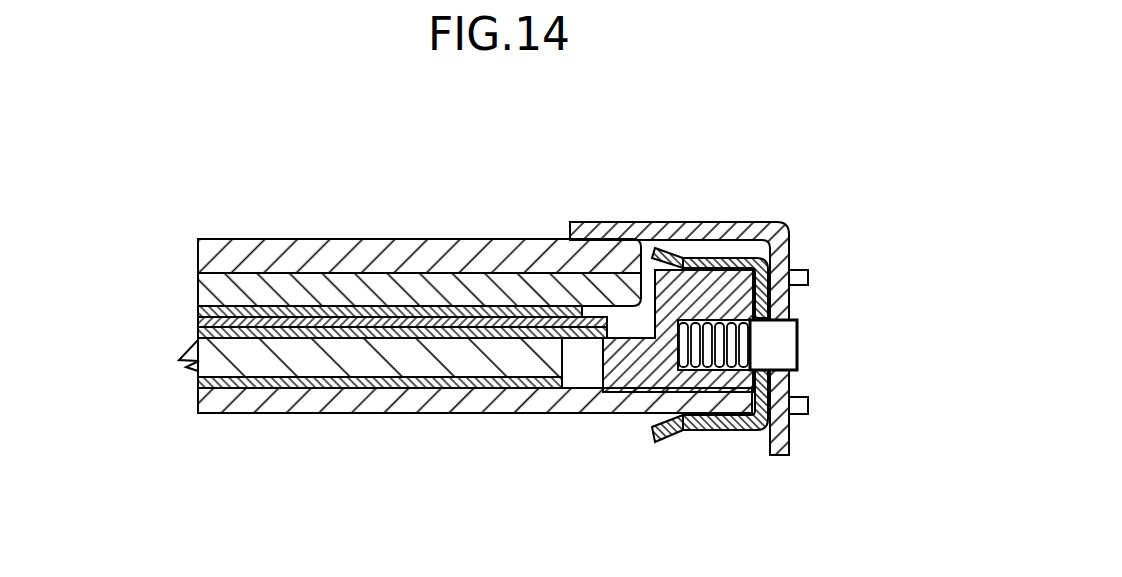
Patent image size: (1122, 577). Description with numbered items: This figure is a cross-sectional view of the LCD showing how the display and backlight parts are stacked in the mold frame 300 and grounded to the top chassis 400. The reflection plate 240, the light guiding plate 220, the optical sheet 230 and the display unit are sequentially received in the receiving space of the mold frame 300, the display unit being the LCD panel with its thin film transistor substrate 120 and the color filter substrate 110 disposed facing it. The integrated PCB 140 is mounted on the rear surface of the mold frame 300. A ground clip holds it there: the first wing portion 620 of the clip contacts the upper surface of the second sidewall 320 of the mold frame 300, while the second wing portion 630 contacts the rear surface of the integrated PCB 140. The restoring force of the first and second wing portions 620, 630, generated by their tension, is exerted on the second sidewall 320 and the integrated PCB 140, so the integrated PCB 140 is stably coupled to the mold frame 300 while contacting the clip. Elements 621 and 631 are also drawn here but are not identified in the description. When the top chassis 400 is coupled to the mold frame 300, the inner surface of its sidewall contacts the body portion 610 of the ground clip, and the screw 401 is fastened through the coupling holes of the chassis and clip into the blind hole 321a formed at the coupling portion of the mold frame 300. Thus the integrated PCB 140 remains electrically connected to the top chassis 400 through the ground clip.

The color filter substrate 110 is at (197, 243).
The thin film transistor substrate 120 is at (197, 288).
The optical sheet 230 is at (197, 305).
The light guiding plate 220 is at (197, 387).
The reflection plate 240 is at (255, 389).
The integrated PCB 140 is at (358, 414).
The mold frame 300 is at (622, 384).
The second sidewall 320 is at (770, 381).
The blind hole 321a is at (730, 428).
The top chassis 400 is at (790, 236).
The screw 401 is at (783, 342).
The body portion 610 is at (759, 344).
The first wing portion 620 is at (712, 217).
The upper contact tip 621 is at (667, 250).
The second wing portion 630 is at (698, 471).
The lower contact tip 631 is at (703, 431).